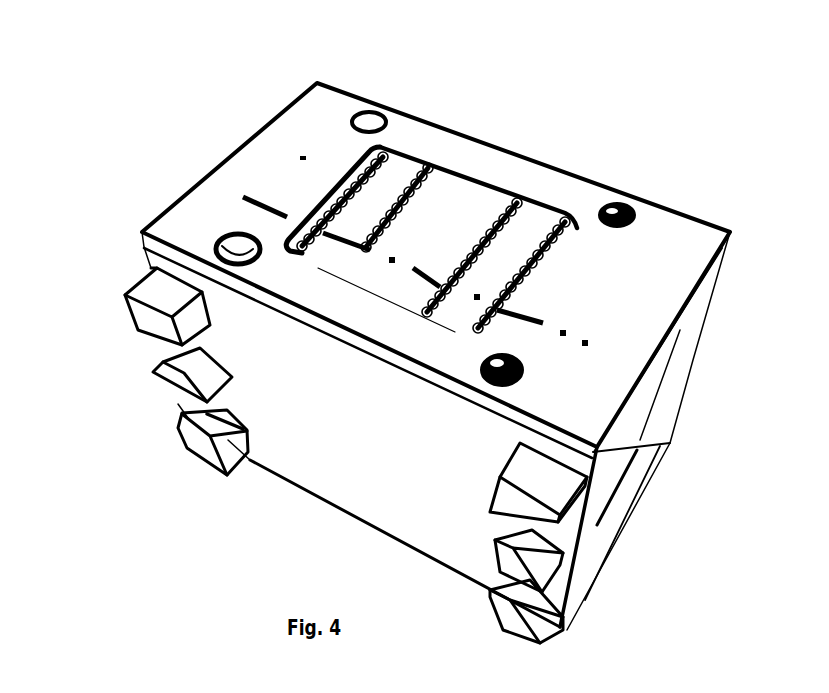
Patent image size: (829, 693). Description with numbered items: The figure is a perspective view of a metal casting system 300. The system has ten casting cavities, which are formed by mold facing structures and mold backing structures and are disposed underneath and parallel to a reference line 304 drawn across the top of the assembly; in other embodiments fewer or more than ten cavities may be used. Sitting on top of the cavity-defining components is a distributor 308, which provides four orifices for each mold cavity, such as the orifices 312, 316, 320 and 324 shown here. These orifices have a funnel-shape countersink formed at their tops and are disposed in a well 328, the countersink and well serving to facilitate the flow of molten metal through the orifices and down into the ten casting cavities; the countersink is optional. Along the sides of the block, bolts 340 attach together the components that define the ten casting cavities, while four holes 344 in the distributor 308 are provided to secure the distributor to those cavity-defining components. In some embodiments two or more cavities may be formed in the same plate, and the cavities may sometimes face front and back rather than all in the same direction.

The metal casting system 300 is at (194, 144).
The reference line 304 is at (252, 206).
The distributor 308 is at (270, 110).
The orifice 312 is at (413, 117).
The orifice 316 is at (426, 162).
The orifice 320 is at (503, 205).
The orifice 324 is at (553, 222).
The well 328 is at (477, 150).
The bolts 340 is at (182, 414).
The holes 344 is at (368, 112).